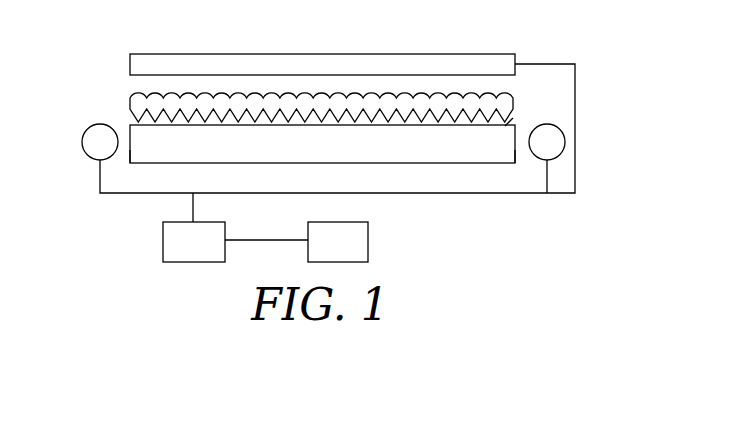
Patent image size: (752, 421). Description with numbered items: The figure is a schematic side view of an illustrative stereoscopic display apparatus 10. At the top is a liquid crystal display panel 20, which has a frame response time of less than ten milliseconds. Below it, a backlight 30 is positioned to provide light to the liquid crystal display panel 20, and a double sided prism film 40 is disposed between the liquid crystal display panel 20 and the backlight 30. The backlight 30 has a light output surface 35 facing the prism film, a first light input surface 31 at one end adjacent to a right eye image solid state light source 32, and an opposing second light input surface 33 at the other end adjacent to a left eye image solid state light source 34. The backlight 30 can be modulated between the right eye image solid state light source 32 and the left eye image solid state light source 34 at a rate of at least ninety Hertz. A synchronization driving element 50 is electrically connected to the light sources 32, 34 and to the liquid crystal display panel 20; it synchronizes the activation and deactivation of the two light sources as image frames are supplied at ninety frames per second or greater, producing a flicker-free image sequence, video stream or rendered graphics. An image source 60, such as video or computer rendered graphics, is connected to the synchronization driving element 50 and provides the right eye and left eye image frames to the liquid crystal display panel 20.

The stereoscopic display apparatus 10 is at (440, 40).
The liquid crystal display panel 20 is at (140, 62).
The double sided prism film 40 is at (136, 97).
The backlight 30 is at (127, 113).
The light output surface 35 is at (505, 126).
The second light input surface 33 is at (130, 150).
The first light input surface 31 is at (515, 150).
The left eye image solid state light source 34 is at (93, 142).
The right eye image solid state light source 32 is at (553, 138).
The synchronization driving element 50 is at (170, 243).
The image source 60 is at (370, 242).